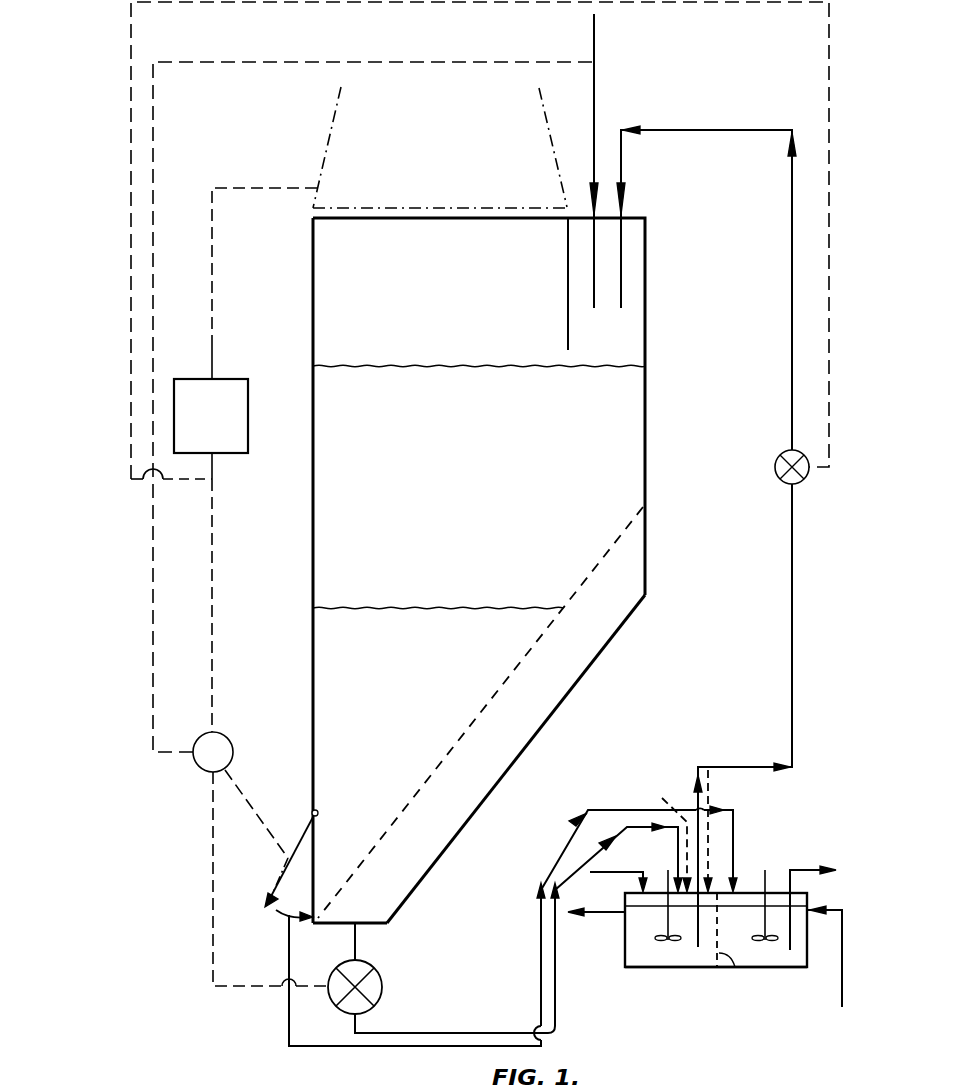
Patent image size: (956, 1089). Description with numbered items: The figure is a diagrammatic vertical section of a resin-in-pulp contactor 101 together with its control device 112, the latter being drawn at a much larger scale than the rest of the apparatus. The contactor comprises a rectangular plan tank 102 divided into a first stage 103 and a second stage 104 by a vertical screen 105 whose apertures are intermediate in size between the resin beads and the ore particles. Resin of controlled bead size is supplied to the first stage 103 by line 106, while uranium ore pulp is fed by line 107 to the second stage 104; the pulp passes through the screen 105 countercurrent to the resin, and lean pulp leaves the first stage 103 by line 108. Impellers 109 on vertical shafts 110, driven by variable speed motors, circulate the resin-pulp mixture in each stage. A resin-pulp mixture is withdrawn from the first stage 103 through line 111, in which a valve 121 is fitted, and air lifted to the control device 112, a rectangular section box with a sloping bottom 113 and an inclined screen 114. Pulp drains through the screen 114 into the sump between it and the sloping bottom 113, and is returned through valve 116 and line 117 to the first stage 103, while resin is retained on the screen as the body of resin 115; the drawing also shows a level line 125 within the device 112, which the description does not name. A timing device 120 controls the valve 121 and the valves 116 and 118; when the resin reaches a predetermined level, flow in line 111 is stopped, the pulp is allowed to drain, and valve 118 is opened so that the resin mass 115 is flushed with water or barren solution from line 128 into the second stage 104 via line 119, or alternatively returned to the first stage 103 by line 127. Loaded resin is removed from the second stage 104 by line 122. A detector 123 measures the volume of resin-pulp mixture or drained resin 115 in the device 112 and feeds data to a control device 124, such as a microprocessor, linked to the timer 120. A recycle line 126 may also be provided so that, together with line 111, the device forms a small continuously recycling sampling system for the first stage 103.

The resin-in-pulp contactor 101 is at (646, 976).
The rectangular plan tank 102 is at (625, 955).
The first stage 103 is at (690, 960).
The second stage 104 is at (753, 957).
The vertical screen 105 is at (735, 970).
The line 106 is at (612, 873).
The line 107 is at (842, 995).
The line 108 is at (612, 912).
The impellers 109 is at (668, 968).
The vertical shafts 110 is at (667, 874).
The line 111 is at (792, 673).
The control device 112 is at (308, 421).
The sloping bottom 113 is at (598, 652).
The inclined screen 114 is at (472, 725).
The resin 115 is at (328, 640).
The valve 116 is at (380, 985).
The line 117 is at (585, 862).
The valve 118 is at (276, 878).
The line 119 is at (622, 810).
The timing device 120 is at (208, 738).
The valve 121 is at (781, 460).
The line 122 is at (793, 870).
The detector 123 is at (330, 115).
The control device 124 is at (198, 380).
The liquid level 125 is at (408, 366).
The recycle line 126 is at (710, 830).
The line 127 is at (664, 833).
The line 128 is at (597, 92).